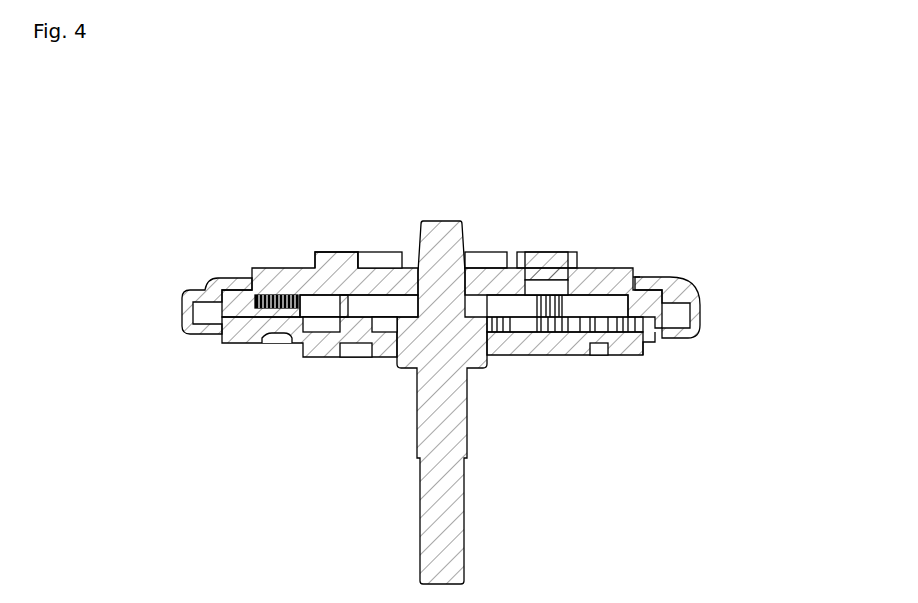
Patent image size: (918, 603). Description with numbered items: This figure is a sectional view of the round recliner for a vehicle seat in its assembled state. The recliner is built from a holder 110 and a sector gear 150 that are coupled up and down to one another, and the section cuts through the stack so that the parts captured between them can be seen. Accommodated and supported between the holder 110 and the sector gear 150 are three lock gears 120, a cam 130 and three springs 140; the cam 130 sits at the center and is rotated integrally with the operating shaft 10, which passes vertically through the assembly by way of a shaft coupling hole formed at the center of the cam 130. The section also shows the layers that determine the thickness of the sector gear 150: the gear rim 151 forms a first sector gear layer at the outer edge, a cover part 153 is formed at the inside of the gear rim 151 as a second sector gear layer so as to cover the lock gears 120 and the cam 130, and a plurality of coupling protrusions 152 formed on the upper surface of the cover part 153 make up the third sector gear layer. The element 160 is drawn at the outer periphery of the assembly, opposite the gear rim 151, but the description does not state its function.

The operating shaft 10 is at (406, 486).
The holder 110 is at (641, 368).
The lock gear 120 is at (580, 333).
The cam 130 is at (362, 330).
The spring 140 is at (622, 346).
The sector gear 150 is at (611, 256).
The gear rim 151 is at (210, 282).
The coupling protrusion 152 is at (333, 267).
The cover part 153 is at (285, 278).
The right cap 160 is at (684, 273).